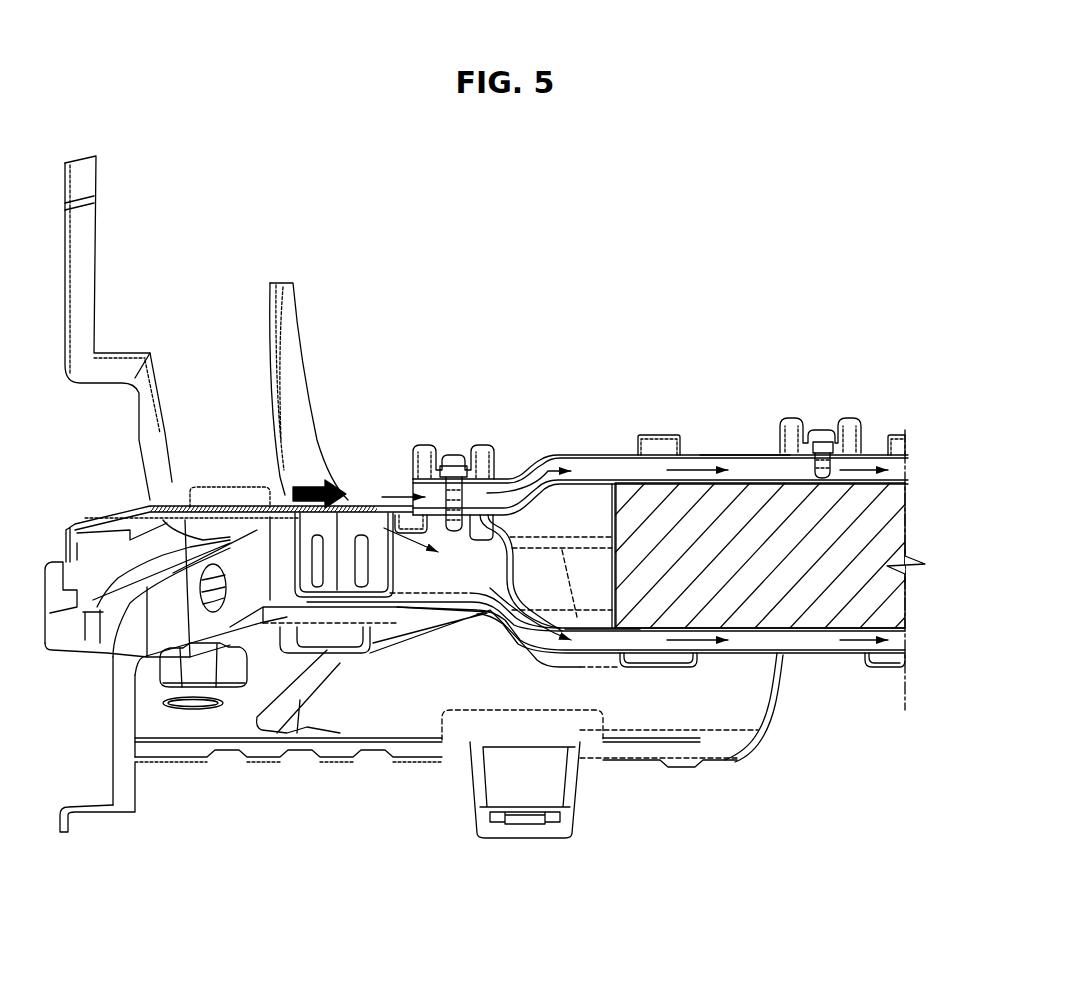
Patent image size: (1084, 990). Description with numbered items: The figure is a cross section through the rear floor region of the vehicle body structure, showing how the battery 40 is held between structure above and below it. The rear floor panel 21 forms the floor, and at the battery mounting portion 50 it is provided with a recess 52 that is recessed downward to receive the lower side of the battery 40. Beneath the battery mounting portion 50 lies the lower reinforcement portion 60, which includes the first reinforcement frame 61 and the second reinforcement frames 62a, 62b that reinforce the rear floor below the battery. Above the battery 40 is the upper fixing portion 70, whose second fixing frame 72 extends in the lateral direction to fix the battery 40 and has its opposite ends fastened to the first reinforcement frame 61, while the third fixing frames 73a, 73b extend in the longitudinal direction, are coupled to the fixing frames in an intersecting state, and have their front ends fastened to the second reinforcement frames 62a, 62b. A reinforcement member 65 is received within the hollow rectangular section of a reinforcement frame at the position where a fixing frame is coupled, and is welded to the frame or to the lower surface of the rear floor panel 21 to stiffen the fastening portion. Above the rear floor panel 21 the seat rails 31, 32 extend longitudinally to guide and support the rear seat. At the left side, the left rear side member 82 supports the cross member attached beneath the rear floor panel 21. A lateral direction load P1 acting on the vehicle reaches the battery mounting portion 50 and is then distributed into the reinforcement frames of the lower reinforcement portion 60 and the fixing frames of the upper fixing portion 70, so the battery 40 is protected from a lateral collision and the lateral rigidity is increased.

The lateral direction load P1 is at (312, 490).
The rear floor panel 21 is at (363, 506).
The seat rail 31 is at (425, 447).
The seat rail 32 is at (793, 437).
The battery 40 is at (872, 525).
The battery mounting portion 50 is at (605, 608).
The recess 52 is at (588, 626).
The lower reinforcement portion 60 is at (728, 672).
The first reinforcement frame 61 is at (777, 658).
The second reinforcement frame 62a is at (658, 670).
The second reinforcement frame 62b is at (887, 670).
The reinforcement member 65 is at (487, 535).
The upper fixing portion 70 is at (699, 430).
The second fixing frame 72 is at (740, 454).
The third fixing frame 73a is at (658, 433).
The third fixing frame 73b is at (893, 433).
The left rear side member 82 is at (316, 592).